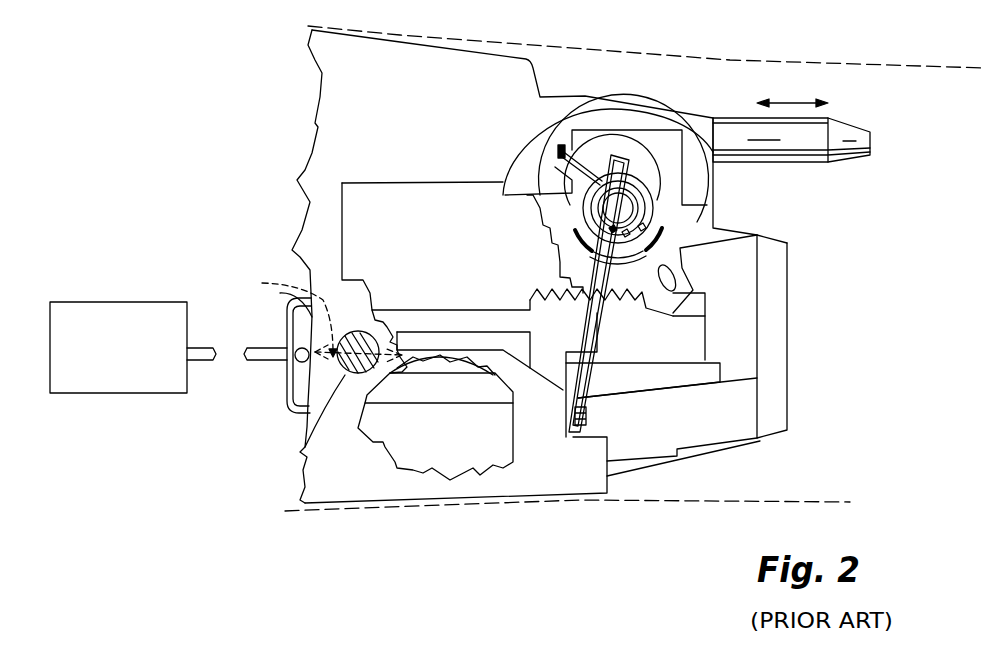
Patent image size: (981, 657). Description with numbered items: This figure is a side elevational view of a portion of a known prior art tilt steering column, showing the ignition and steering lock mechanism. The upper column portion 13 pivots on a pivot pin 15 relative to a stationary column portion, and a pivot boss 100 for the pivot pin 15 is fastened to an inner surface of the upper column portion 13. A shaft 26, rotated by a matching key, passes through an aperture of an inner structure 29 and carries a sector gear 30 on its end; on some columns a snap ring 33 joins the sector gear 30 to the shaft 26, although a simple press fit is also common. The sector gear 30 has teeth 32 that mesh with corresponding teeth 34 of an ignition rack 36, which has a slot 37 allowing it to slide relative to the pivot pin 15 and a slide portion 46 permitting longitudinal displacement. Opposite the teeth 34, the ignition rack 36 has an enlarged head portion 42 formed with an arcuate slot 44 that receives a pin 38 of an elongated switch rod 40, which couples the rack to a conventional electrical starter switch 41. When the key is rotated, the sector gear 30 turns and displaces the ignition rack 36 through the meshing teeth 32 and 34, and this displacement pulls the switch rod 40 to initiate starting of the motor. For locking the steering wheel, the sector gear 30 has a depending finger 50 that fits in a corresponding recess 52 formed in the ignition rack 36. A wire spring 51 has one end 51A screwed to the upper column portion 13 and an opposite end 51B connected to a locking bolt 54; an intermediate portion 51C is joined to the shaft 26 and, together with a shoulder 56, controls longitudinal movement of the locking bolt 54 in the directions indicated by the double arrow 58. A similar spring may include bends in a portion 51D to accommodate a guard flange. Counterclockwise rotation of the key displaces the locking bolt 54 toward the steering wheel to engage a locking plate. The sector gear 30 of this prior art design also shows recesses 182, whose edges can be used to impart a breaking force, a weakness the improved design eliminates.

The upper column portion 13 is at (522, 497).
The pivot pin 15 is at (308, 448).
The shaft 26 is at (647, 213).
The inner structure 29 is at (787, 380).
The sector gear 30 is at (680, 202).
The teeth 32 is at (549, 260).
The snap ring 33 is at (657, 192).
The teeth 34 is at (548, 280).
The ignition rack 36 is at (678, 386).
The slot 37 is at (453, 375).
The pin 38 is at (298, 361).
The switch rod 40 is at (253, 348).
The electrical starter switch 41 is at (168, 396).
The head portion 42 is at (274, 428).
The arcuate slot 44 is at (302, 352).
The slide portion 46 is at (403, 418).
The depending finger 50 is at (693, 272).
The wire spring 51 is at (528, 299).
The end 51A is at (577, 393).
The end 51B is at (584, 150).
The intermediate portion 51C is at (527, 204).
The portion 51D is at (660, 284).
The recess 52 is at (683, 317).
The locking bolt 54 is at (872, 158).
The shoulder 56 is at (534, 146).
The double arrow 58 is at (792, 103).
The pivot boss 100 is at (312, 317).
The recesses 182 is at (652, 148).